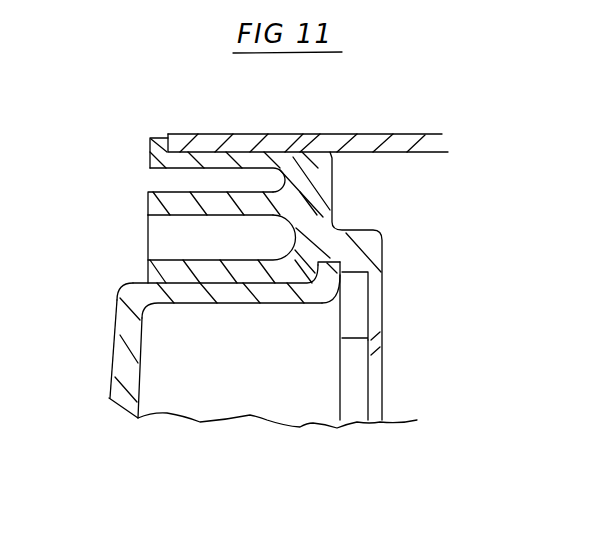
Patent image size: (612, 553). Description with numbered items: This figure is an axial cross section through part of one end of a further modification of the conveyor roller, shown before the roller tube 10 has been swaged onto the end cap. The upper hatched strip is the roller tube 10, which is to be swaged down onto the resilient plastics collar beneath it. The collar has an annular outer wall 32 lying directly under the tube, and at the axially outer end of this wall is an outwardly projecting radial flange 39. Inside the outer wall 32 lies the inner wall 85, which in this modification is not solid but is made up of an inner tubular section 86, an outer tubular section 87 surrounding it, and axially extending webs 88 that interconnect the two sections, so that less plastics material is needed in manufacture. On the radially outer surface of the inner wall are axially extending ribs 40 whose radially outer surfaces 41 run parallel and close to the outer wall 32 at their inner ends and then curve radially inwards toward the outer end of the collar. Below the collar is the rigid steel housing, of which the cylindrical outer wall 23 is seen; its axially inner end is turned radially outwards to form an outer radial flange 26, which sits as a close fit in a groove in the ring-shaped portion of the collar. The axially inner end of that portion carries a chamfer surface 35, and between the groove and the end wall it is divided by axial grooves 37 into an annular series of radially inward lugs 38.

The roller tube 10 is at (400, 135).
The annular outer wall 32 is at (210, 163).
The radial flange 39 is at (149, 138).
The radially outer surfaces 41 is at (183, 182).
The outer tubular section 87 is at (148, 191).
The inner wall 85 is at (147, 218).
The axially extending ribs 40 is at (218, 186).
The axially extending webs 88 is at (175, 242).
The inner tubular section 86 is at (145, 275).
The outer radial flange 26 is at (325, 278).
The chamfer surface 35 is at (458, 258).
The lugs 38 is at (355, 297).
The axial grooves 37 is at (370, 345).
The cylindrical outer wall 23 is at (178, 297).